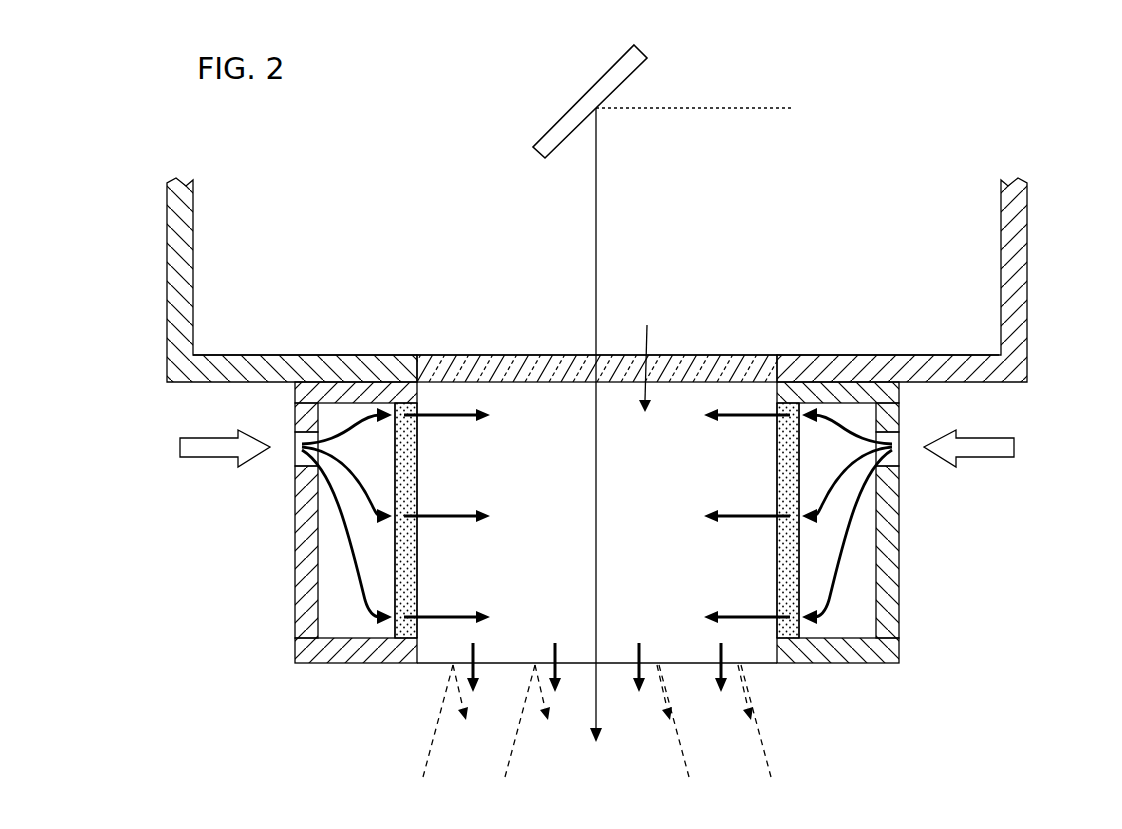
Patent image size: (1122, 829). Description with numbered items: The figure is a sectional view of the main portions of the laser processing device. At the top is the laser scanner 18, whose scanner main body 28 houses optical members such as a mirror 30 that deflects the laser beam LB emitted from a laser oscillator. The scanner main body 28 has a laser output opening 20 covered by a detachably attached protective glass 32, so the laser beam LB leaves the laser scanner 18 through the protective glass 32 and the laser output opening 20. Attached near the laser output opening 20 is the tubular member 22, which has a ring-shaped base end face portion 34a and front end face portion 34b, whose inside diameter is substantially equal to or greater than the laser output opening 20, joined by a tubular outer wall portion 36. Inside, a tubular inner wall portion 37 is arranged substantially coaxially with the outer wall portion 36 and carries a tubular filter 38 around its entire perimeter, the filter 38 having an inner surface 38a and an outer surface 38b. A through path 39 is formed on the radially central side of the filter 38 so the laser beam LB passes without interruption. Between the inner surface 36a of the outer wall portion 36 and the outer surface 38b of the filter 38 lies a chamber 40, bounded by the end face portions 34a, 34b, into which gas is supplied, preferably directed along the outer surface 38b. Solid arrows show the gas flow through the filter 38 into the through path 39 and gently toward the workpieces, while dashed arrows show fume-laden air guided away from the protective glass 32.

The laser scanner 18 is at (961, 149).
The scanner main body 28 is at (1020, 227).
The mirror 30 is at (539, 140).
The laser beam LB is at (599, 204).
The protective glass 32 is at (511, 372).
The laser output opening 20 is at (772, 368).
The through path 39 is at (649, 356).
The base end face portion 34a is at (862, 393).
The front end face portion 34b is at (847, 648).
The outer wall portion 36 is at (886, 566).
The inner surface of outer wall portion 36a is at (880, 536).
The filter 38 is at (406, 561).
The inner surface of filter 38a is at (420, 446).
The outer surface of filter 38b is at (397, 470).
The inner wall portion 37 is at (418, 587).
The chamber 40 is at (852, 597).
The tubular member 22 is at (952, 501).